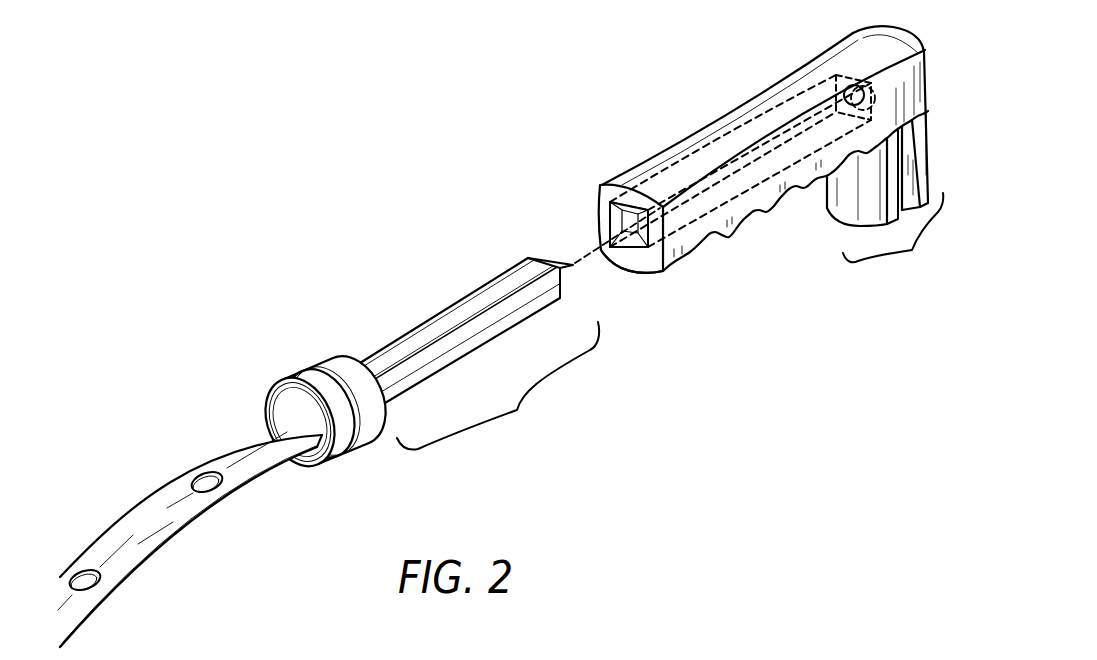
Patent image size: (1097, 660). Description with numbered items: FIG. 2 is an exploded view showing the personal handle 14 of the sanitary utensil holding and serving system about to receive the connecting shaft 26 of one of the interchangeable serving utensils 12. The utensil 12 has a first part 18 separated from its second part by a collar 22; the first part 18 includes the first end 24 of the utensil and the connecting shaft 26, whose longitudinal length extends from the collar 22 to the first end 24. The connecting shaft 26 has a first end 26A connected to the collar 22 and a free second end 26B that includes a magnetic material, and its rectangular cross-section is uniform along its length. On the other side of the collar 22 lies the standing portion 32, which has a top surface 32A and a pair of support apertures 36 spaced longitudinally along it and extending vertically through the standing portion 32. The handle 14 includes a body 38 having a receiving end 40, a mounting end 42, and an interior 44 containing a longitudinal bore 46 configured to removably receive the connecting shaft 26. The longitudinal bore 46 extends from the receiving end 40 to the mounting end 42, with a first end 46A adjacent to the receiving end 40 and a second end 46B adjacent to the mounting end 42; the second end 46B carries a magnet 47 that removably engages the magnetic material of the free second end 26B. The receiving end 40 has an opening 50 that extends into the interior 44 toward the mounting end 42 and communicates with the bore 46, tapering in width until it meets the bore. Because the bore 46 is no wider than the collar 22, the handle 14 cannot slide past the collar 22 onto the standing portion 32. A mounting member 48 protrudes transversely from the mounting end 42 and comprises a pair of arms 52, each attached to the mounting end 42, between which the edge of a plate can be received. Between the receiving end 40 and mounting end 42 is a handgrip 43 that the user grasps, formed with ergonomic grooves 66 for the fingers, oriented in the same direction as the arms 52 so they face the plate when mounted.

The interchangeable serving utensil 12 is at (215, 352).
The handle 14 is at (735, 85).
The first part 18 is at (498, 386).
The collar 22 is at (328, 358).
The first end 24 is at (574, 266).
The connecting shaft 26 is at (437, 323).
The first end of connecting shaft 26A is at (357, 363).
The free second end of connecting shaft 26B is at (540, 257).
The standing portion 32 is at (147, 503).
The top surface 32A is at (172, 521).
The support apertures 36 is at (90, 570).
The body 38 is at (834, 47).
The receiving end 40 is at (599, 196).
The mounting end 42 is at (928, 68).
The handgrip 43 is at (782, 205).
The interior 44 is at (649, 250).
The longitudinal bore 46 is at (695, 160).
The first end of longitudinal bore 46A is at (632, 188).
The second end of longitudinal bore 46B is at (849, 77).
The magnet 47 is at (866, 80).
The mounting member 48 is at (885, 200).
The opening 50 is at (628, 262).
The arms 52 is at (850, 207).
The ergonomic grooves 66 is at (710, 240).